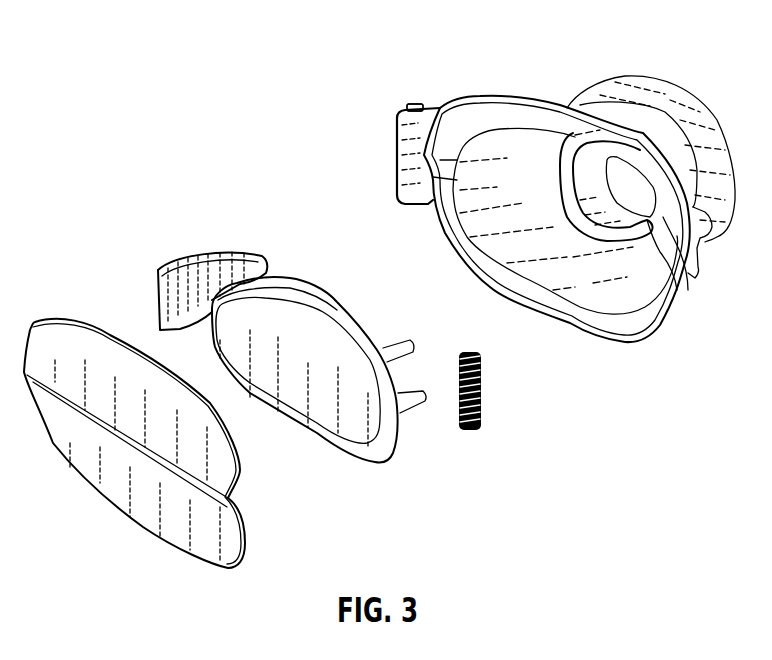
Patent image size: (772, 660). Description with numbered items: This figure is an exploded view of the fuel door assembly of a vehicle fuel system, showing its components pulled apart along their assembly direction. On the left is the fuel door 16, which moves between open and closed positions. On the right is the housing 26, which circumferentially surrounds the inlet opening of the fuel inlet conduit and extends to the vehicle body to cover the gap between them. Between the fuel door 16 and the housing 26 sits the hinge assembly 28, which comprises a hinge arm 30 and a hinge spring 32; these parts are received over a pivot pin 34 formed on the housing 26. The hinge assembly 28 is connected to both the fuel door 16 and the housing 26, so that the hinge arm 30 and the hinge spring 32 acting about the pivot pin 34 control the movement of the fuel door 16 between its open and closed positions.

The fuel door 16 is at (117, 483).
The housing 26 is at (557, 78).
The hinge assembly 28 is at (183, 238).
The hinge arm 30 is at (211, 268).
The hinge spring 32 is at (483, 390).
The pivot pin 34 is at (414, 104).